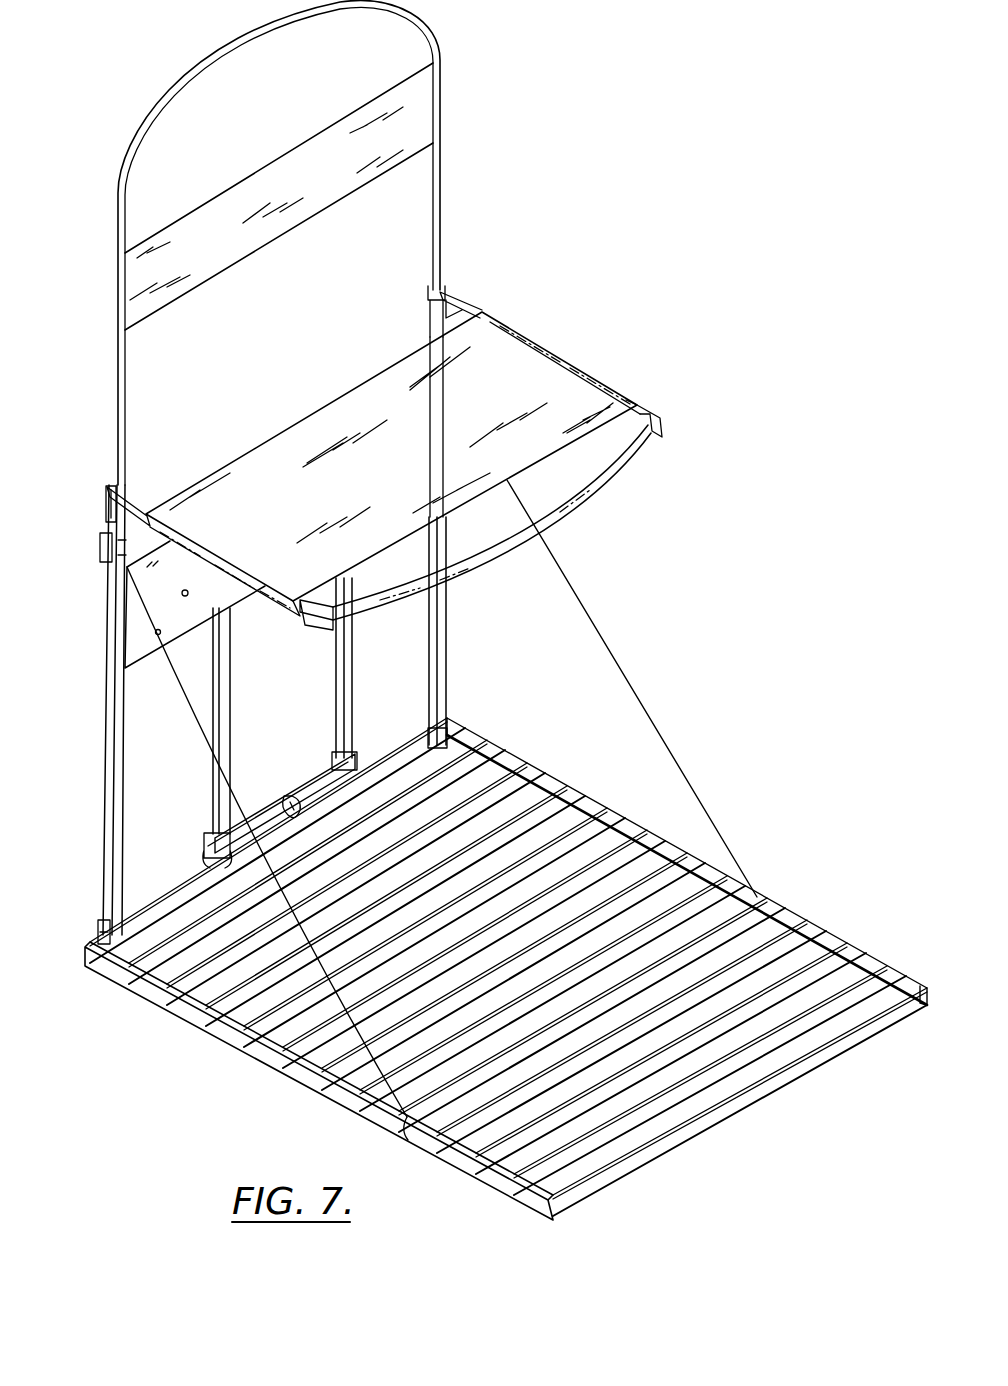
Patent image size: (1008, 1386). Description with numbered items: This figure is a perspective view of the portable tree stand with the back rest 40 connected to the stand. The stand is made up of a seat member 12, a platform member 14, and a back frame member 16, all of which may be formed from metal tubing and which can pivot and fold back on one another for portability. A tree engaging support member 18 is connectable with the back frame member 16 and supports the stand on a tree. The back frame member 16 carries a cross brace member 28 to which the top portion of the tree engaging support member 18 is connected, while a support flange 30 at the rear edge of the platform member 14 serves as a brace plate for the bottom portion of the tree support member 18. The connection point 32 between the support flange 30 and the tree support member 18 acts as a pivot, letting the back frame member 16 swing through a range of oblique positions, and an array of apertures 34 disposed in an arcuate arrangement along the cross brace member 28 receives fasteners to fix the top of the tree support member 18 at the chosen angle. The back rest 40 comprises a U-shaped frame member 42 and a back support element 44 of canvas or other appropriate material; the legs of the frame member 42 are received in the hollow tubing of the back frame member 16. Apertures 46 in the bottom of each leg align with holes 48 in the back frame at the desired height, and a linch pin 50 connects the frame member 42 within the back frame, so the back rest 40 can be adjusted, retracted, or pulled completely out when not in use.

The seat member 12 is at (540, 372).
The platform member 14 is at (810, 933).
The back frame member 16 is at (112, 712).
The tree engaging support member 18 is at (226, 643).
The cross brace member 28 is at (135, 620).
The support flange 30 is at (333, 777).
The connection point 32 is at (294, 802).
The array of apertures 34 is at (162, 648).
The back rest 40 is at (475, 160).
The U-shaped frame member 42 is at (124, 352).
The back support element 44 is at (304, 212).
The apertures 46 is at (125, 477).
The holes 48 is at (108, 556).
The linch pin 50 is at (108, 530).